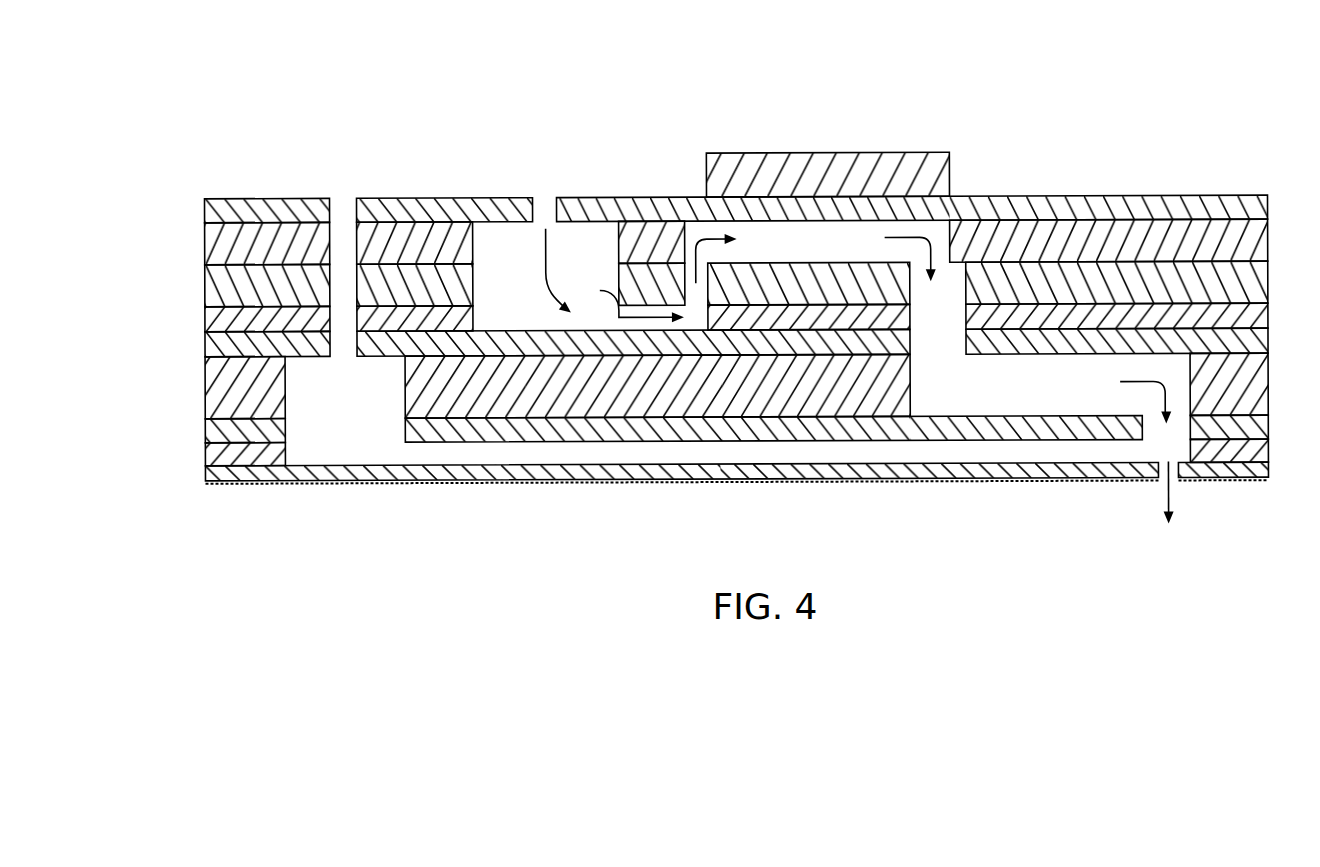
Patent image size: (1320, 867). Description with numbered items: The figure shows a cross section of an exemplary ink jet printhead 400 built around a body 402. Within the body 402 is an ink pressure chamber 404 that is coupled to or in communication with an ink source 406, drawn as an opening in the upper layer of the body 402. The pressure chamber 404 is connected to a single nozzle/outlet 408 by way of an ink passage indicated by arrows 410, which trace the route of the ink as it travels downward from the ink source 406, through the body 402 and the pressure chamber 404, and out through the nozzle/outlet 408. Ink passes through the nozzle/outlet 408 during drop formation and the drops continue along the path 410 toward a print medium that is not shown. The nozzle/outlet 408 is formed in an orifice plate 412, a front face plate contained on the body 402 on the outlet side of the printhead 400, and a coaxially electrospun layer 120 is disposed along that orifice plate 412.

The ink jet printhead 400 is at (736, 306).
The body 402 is at (316, 503).
The ink pressure chamber 404 is at (802, 235).
The ink source 406 is at (547, 206).
The nozzle/outlet 408 is at (1162, 468).
The ink passage 410 is at (680, 198).
The orifice plate 412 is at (1262, 478).
The coaxially electrospun layer 120 is at (736, 512).